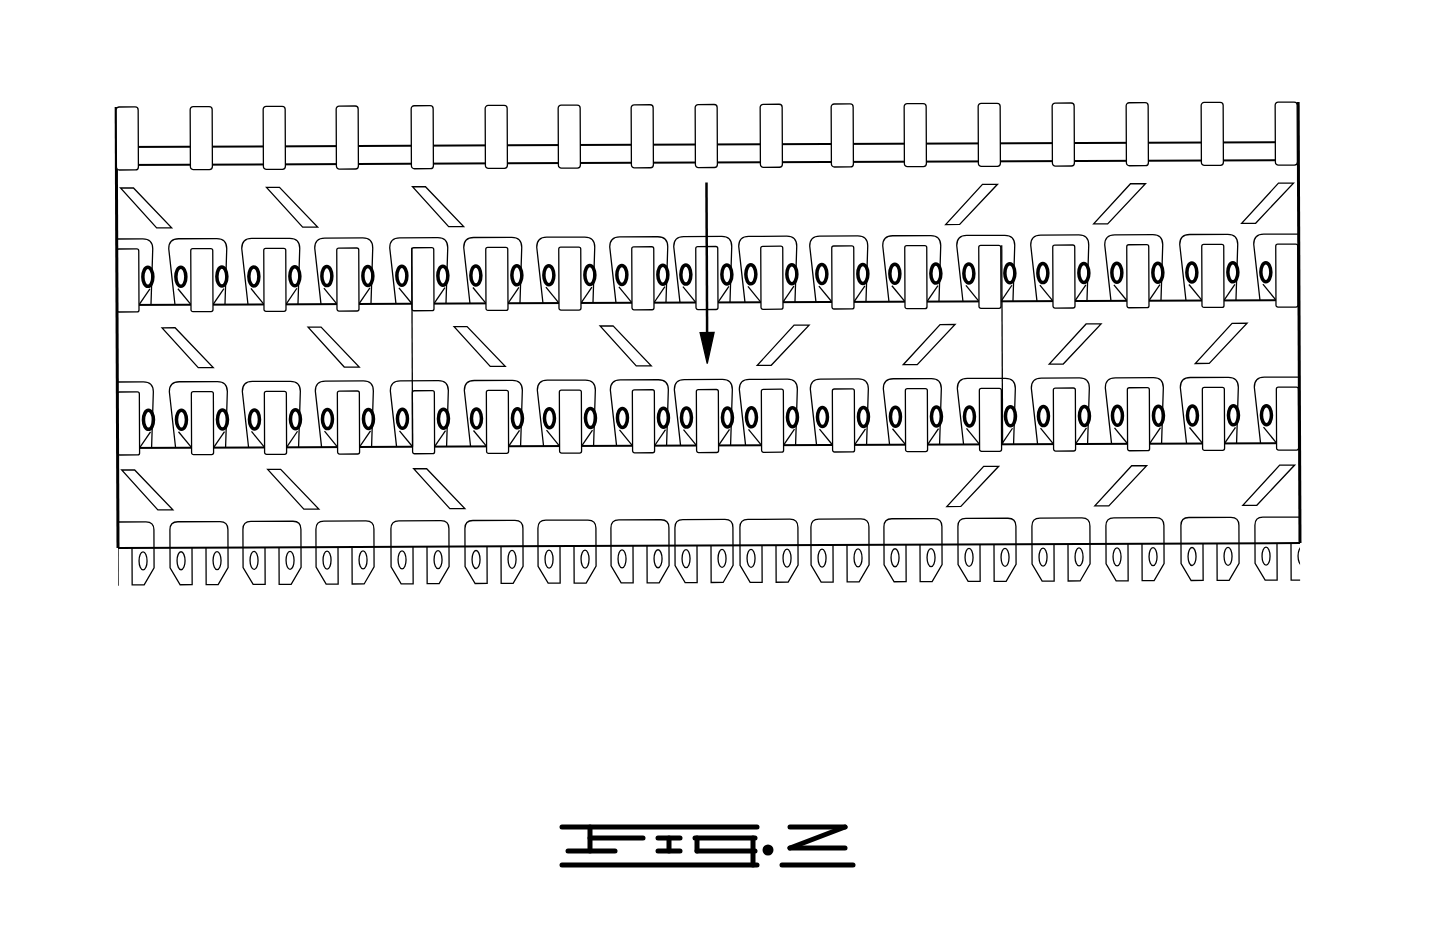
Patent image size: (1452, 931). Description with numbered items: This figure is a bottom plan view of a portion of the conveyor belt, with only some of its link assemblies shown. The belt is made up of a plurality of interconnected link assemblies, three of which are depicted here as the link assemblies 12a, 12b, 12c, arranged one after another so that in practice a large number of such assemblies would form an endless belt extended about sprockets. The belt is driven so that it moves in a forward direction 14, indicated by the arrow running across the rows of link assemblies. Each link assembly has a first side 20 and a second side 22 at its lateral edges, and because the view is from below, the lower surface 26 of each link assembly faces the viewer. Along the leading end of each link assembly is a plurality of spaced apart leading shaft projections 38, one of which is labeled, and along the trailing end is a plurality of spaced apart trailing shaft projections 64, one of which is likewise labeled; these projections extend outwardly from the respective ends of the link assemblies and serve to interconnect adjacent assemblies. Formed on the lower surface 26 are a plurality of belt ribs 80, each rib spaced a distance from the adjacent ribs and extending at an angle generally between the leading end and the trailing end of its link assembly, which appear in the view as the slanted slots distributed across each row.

The link assembly 12a is at (770, 174).
The link assembly 12b is at (1305, 355).
The link assembly 12c is at (770, 520).
The forward direction 14 is at (708, 235).
The first side 20 is at (117, 217).
The second side 22 is at (1302, 177).
The lower surface 26 is at (705, 580).
The leading shaft projection 38 is at (240, 587).
The trailing shaft projection 64 is at (203, 107).
The belt rib 80 is at (450, 204).